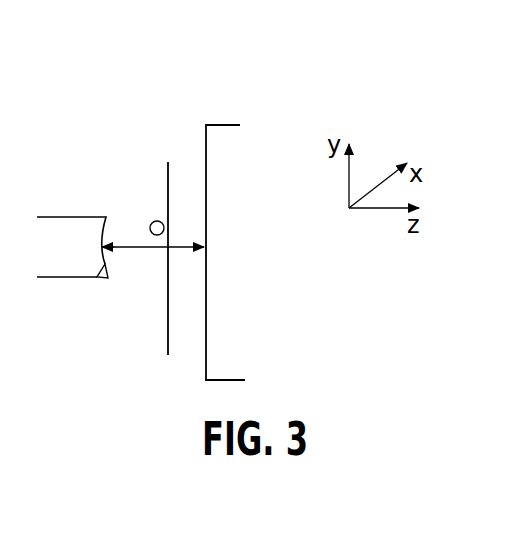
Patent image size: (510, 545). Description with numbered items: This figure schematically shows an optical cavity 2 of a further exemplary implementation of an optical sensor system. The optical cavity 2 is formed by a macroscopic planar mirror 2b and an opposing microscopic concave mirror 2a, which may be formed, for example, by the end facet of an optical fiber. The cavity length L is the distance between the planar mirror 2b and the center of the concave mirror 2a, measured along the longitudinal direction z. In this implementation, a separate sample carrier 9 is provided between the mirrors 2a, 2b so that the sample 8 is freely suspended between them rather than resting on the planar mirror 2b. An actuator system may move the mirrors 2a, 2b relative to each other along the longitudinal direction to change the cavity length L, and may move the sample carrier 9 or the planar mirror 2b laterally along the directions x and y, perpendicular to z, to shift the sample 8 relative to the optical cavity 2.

The optical cavity 2 is at (129, 221).
The concave mirror 2a is at (101, 270).
The planar mirror 2b is at (202, 149).
The sample 8 is at (164, 226).
The sample carrier 9 is at (178, 320).
The cavity length L is at (145, 256).